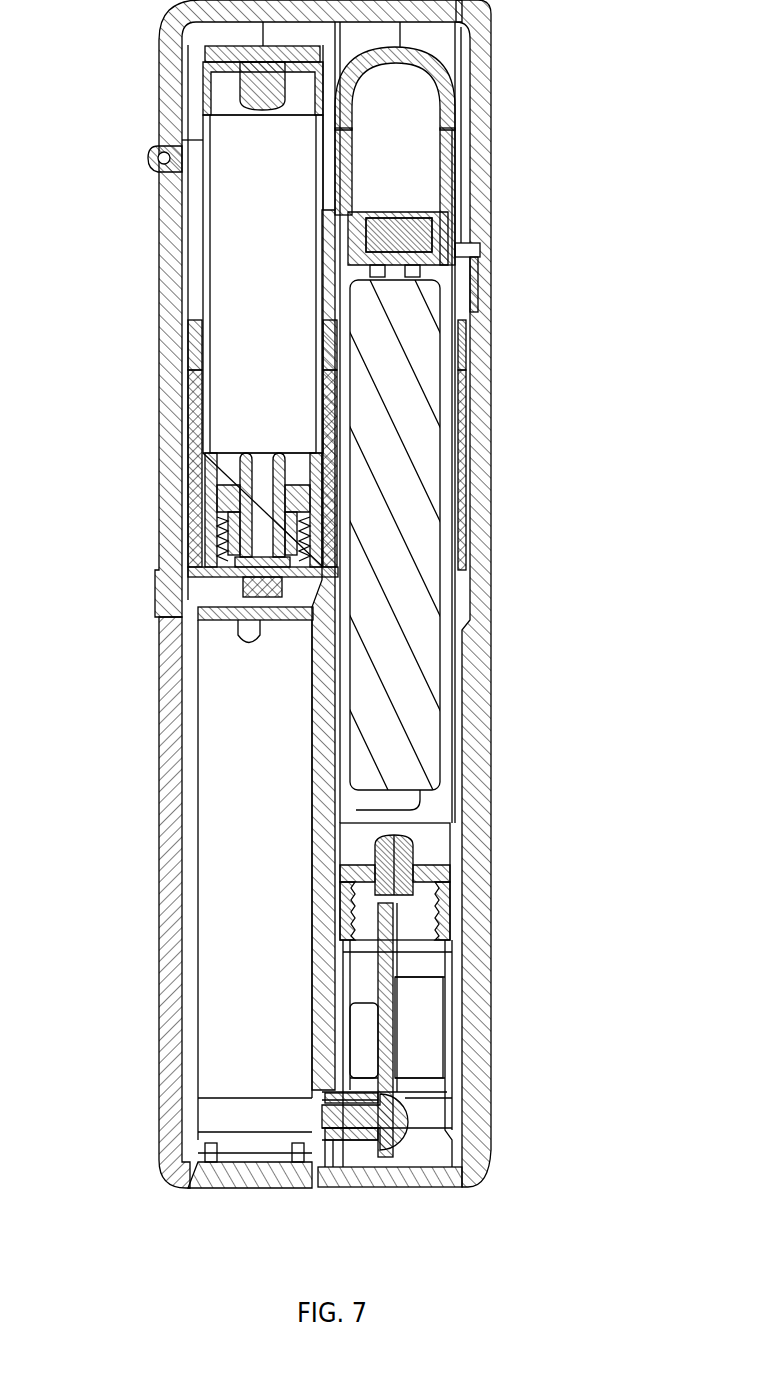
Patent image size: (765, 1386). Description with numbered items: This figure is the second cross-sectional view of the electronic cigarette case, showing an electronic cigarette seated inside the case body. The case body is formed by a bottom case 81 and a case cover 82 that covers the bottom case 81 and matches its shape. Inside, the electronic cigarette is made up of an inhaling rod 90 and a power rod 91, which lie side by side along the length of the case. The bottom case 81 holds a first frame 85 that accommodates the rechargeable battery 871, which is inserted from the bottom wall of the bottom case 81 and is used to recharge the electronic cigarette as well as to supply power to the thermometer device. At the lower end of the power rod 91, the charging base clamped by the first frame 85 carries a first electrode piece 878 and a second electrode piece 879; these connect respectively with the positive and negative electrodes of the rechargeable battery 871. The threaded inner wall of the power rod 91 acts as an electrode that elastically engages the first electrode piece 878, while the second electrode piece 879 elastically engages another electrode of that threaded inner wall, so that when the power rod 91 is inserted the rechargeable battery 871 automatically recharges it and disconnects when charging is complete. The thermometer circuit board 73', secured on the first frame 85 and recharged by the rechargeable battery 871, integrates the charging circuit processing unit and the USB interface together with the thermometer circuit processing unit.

The bottom case 81 is at (167, 248).
The case cover 82 is at (483, 137).
The inhaling rod 90 is at (203, 192).
The first frame 85 is at (322, 816).
The rechargeable battery 871 is at (243, 772).
The power rod 91 is at (455, 883).
The second electrode piece 879 is at (398, 957).
The first electrode piece 878 is at (345, 993).
The thermometer circuit board 73' is at (445, 1030).